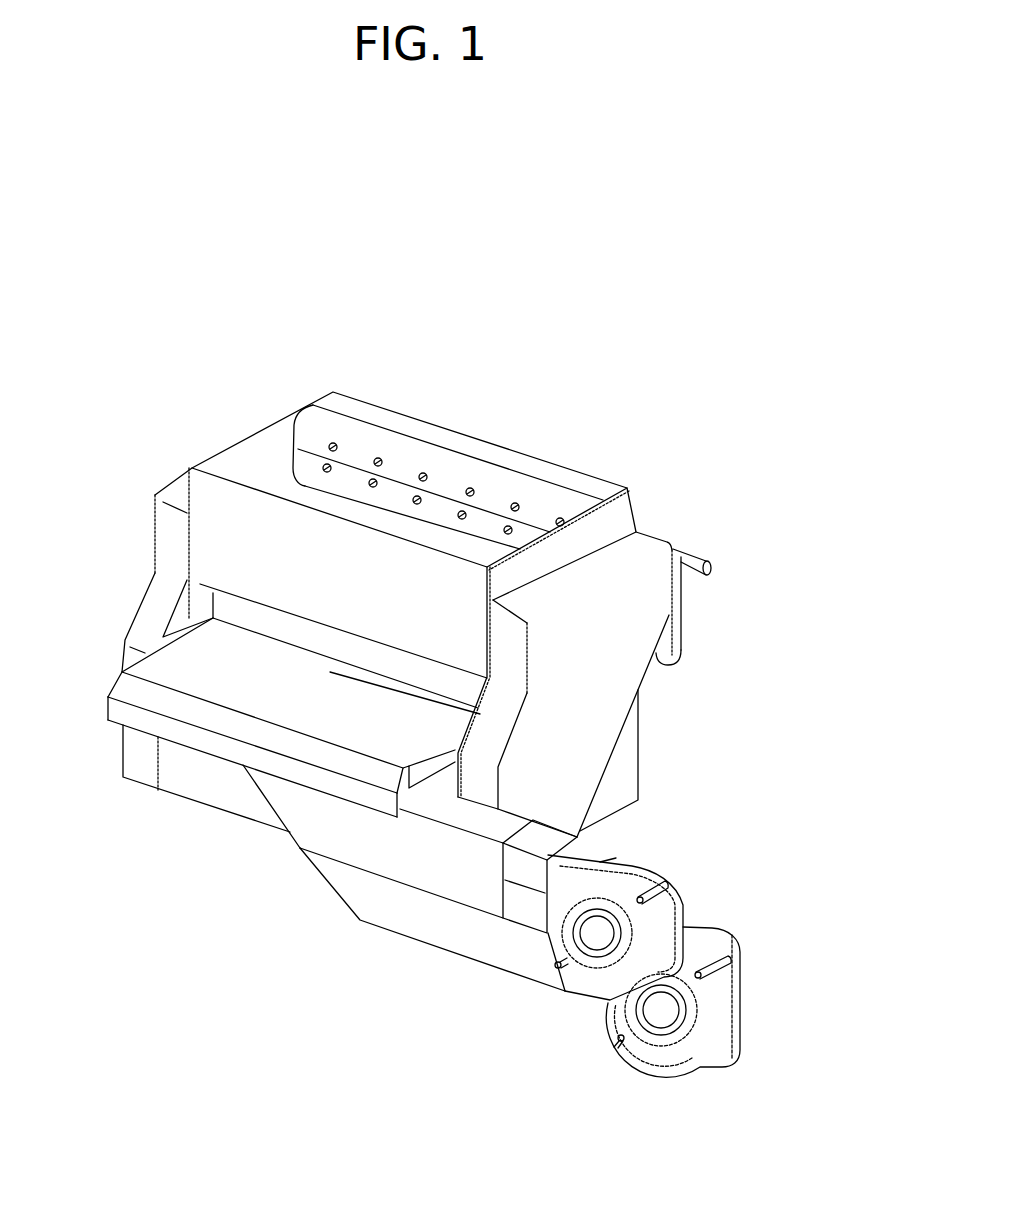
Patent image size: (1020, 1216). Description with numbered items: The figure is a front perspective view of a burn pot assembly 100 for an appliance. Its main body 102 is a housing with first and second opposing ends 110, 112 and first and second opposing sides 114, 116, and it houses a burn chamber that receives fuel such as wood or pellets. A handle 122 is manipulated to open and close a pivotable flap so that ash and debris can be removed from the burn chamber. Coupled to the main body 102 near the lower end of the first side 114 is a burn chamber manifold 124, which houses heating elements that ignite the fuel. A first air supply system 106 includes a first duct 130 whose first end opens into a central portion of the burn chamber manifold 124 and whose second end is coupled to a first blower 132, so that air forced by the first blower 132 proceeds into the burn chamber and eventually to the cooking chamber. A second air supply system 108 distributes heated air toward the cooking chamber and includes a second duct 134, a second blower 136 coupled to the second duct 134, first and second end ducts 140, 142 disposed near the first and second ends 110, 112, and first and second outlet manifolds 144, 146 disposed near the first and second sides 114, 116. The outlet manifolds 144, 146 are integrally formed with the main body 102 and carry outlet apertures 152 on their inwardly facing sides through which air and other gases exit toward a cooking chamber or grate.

The burn pot assembly 100 is at (663, 328).
The main body 102 is at (625, 477).
The first air supply system 106 is at (278, 862).
The second air supply system 108 is at (395, 962).
The first end 110 is at (243, 437).
The second end 112 is at (632, 522).
The first side 114 is at (213, 568).
The second side 116 is at (478, 438).
The handle 122 is at (711, 563).
The burn chamber manifold 124 is at (127, 709).
The first duct 130 is at (362, 857).
The first blower 132 is at (637, 867).
The second duct 134 is at (540, 968).
The second blower 136 is at (731, 1003).
The first end duct 140 is at (158, 514).
The second end duct 142 is at (617, 725).
The first outlet manifold 144 is at (220, 465).
The second outlet manifold 146 is at (348, 420).
The outlet apertures 152 is at (379, 459).